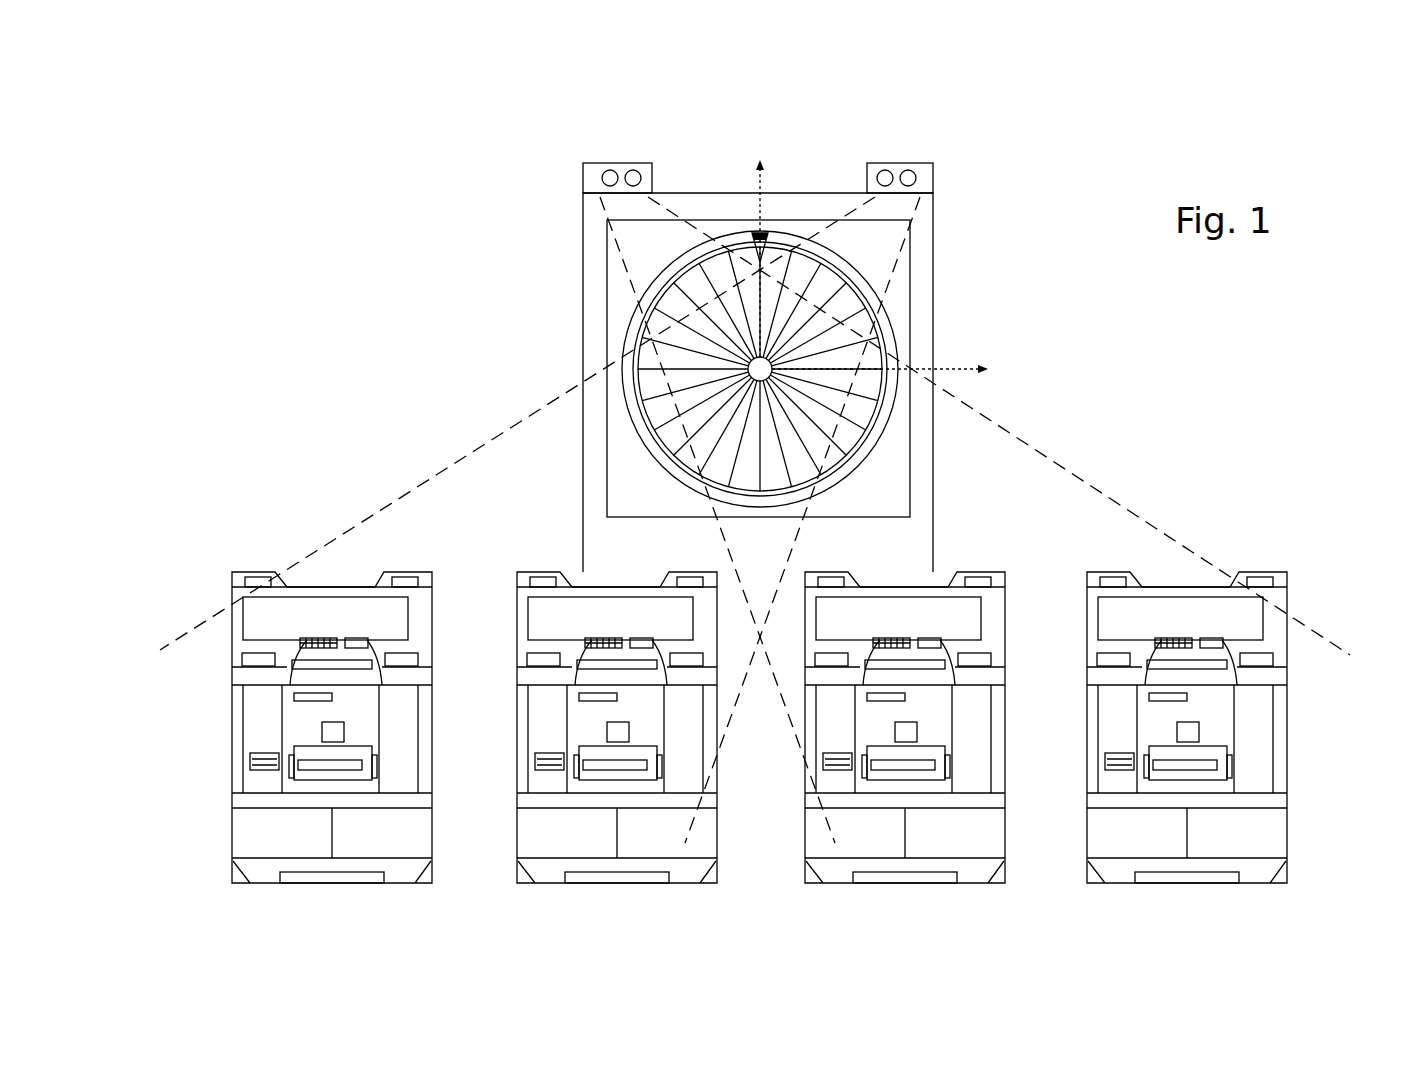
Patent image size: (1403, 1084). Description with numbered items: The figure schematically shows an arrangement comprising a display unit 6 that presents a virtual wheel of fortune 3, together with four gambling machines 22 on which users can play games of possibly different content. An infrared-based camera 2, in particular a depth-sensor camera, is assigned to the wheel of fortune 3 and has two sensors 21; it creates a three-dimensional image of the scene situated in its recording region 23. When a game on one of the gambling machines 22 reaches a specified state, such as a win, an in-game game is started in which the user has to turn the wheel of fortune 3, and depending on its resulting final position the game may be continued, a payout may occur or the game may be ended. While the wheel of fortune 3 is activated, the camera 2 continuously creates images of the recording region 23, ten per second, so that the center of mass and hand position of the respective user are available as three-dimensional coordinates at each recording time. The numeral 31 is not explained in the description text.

The camera 2 is at (572, 181).
The sensors 21 is at (618, 162).
The gambling machines 22 is at (238, 560).
The recording region 23 is at (520, 417).
The wheel of fortune 3 is at (956, 304).
The roulette wheel image 31 is at (883, 310).
The display unit 6 is at (913, 480).